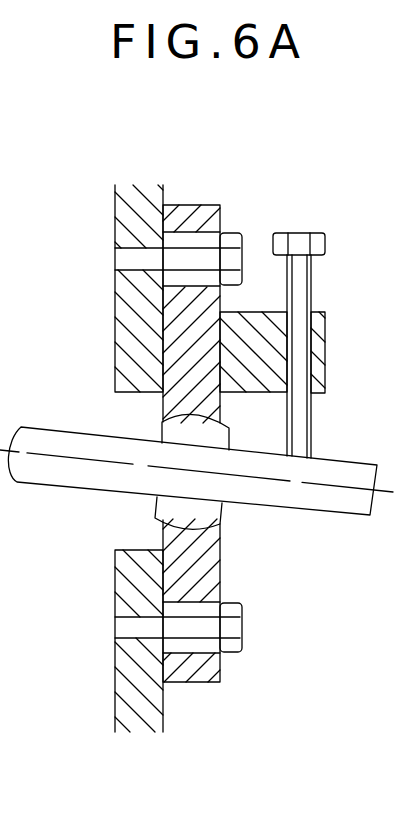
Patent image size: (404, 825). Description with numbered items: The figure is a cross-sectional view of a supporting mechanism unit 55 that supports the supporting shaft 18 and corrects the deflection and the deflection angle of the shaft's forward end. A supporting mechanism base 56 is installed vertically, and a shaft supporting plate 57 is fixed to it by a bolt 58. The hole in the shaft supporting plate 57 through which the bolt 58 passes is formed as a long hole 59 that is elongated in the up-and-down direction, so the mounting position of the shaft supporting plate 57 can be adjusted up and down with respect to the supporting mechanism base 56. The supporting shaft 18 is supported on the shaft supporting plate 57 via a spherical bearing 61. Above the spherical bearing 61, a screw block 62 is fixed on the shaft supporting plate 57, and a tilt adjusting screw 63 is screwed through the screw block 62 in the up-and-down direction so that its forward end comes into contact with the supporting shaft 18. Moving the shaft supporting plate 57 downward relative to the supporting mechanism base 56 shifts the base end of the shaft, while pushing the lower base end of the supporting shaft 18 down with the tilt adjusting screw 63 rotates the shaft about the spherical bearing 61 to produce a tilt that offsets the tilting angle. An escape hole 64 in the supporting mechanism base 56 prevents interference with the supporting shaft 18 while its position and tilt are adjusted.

The supporting mechanism unit 55 is at (178, 150).
The supporting mechanism base 56 is at (115, 250).
The shaft supporting plate 57 is at (195, 205).
The bolt 58 is at (243, 241).
The long hole 59 is at (243, 279).
The spherical bearing 61 is at (155, 506).
The screw block 62 is at (327, 350).
The tilt adjusting screw 63 is at (327, 250).
The escape hole 64 is at (133, 417).
The supporting shaft 18 is at (68, 432).